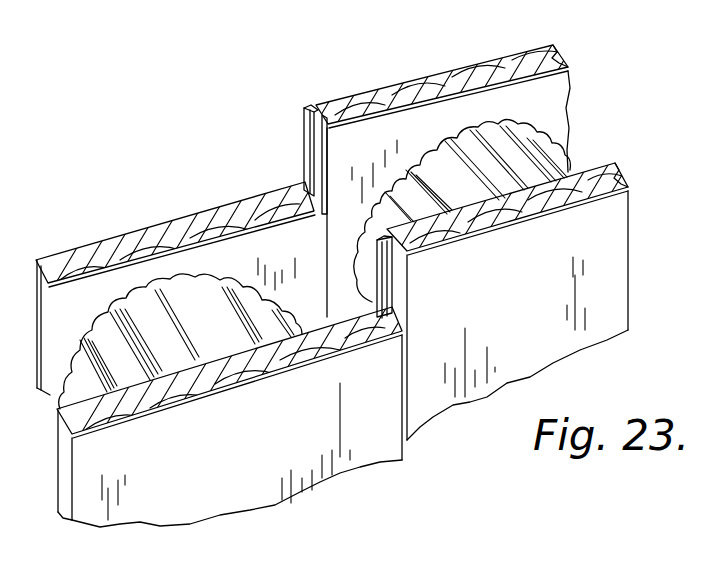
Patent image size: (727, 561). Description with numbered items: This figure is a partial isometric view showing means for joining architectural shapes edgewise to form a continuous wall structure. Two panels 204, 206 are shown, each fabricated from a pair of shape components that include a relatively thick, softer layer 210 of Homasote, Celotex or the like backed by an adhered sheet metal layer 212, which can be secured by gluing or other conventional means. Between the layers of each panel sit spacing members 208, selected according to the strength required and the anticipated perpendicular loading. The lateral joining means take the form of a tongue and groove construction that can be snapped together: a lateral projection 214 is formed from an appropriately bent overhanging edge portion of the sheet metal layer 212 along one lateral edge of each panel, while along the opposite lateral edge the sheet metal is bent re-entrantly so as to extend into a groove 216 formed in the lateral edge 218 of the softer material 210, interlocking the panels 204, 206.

The panel 204 is at (140, 222).
The panel 206 is at (456, 38).
The spacing member 208 is at (101, 318).
The softer layer 210 is at (223, 208).
The sheet metal layer 212 is at (318, 430).
The lateral projection 214 is at (384, 288).
The groove 216 is at (323, 114).
The lateral edge 218 is at (305, 133).